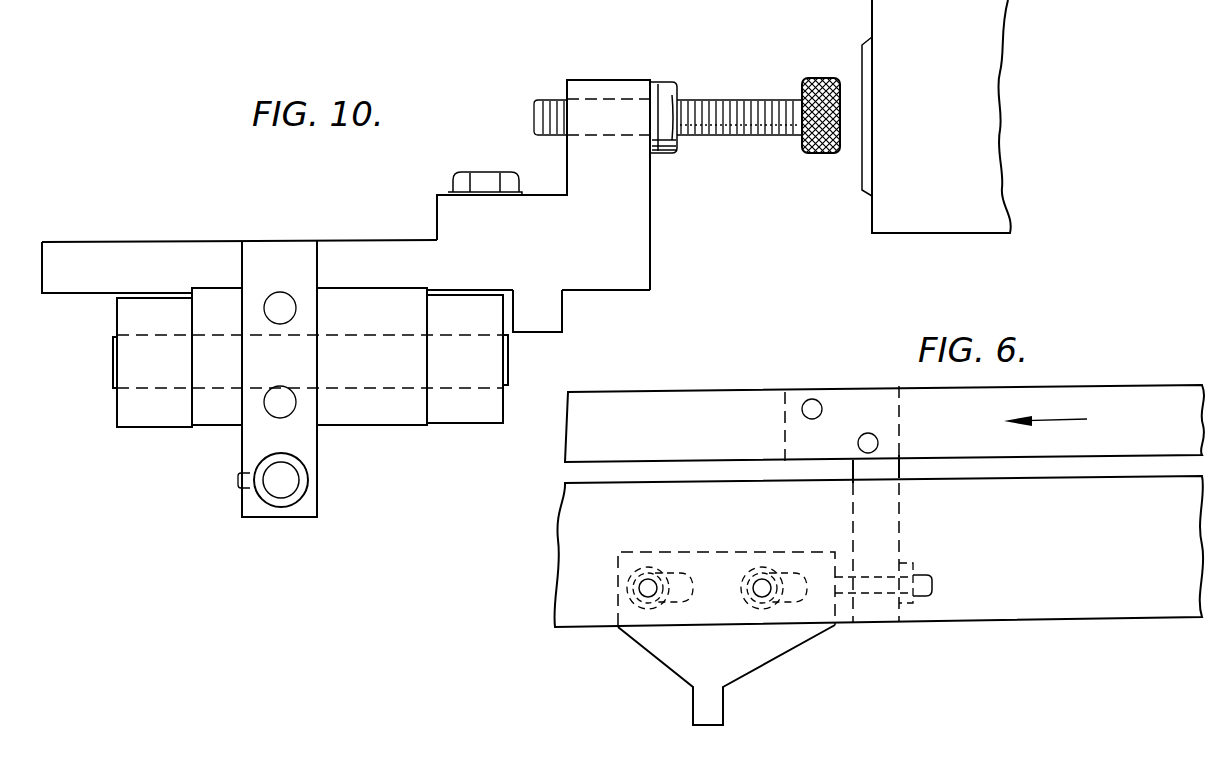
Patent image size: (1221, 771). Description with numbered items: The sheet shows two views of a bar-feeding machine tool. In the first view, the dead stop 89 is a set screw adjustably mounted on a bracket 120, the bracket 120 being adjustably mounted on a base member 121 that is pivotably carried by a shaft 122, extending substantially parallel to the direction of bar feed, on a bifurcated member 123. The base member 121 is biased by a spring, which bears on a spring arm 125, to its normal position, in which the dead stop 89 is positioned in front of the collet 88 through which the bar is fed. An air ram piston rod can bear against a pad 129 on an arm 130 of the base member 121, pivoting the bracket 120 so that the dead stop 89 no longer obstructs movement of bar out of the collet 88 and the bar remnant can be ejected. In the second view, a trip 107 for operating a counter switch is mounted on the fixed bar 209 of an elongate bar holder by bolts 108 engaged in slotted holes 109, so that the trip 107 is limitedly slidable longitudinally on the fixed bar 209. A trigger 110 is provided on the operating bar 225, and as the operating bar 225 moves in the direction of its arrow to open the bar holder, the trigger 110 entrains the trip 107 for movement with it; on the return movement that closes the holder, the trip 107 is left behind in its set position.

In FIG. 10, the collet 88 is at (862, 72).
In FIG. 10, the dead stop 89 is at (813, 155).
In FIG. 10, the bracket 120 is at (638, 212).
In FIG. 10, the base member 121 is at (368, 407).
In FIG. 10, the shaft 122 is at (502, 358).
In FIG. 10, the bifurcated member 123 is at (472, 433).
In FIG. 10, the spring arm 125 is at (547, 317).
In FIG. 10, the pad 129 is at (283, 485).
In FIG. 10, the arm 130 is at (307, 447).
In FIG. 6, the trip 107 is at (710, 710).
In FIG. 6, the bolt 108 is at (762, 580).
In FIG. 6, the slotted hole 109 is at (805, 573).
In FIG. 6, the trigger 110 is at (882, 467).
In FIG. 6, the fixed bar 209 is at (582, 608).
In FIG. 6, the operating bar 225 is at (667, 418).